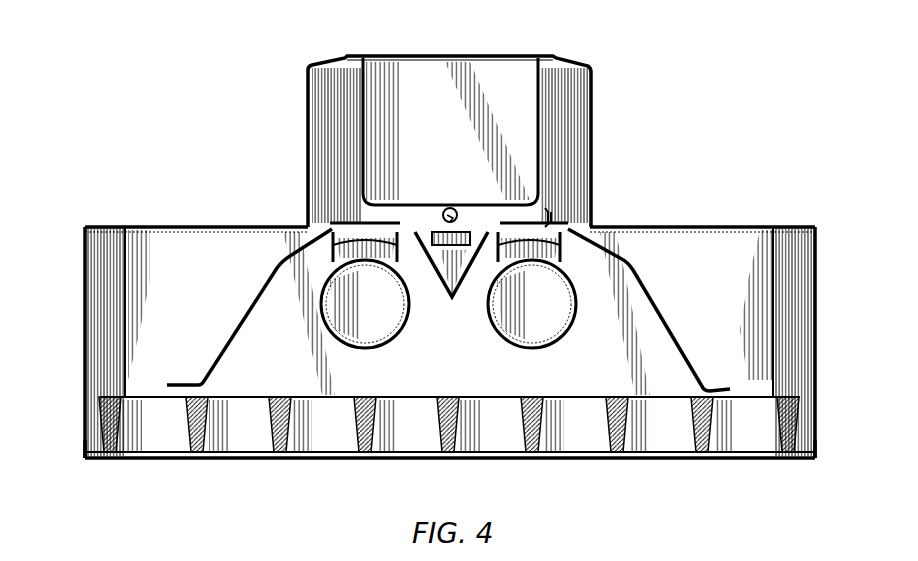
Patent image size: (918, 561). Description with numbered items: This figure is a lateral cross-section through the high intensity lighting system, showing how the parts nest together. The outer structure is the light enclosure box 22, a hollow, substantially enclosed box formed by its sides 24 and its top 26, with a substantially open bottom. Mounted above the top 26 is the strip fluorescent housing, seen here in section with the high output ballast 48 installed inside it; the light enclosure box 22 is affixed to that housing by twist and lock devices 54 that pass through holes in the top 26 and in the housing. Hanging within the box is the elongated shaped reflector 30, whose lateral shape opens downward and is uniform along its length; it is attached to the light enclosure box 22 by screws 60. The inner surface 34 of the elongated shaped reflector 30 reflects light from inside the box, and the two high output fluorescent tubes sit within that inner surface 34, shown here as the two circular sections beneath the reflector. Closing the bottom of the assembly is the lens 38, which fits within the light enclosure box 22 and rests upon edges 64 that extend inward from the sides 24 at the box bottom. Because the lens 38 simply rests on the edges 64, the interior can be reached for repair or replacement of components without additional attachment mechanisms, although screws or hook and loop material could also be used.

The light enclosure box 22 is at (188, 227).
The sides 24 is at (85, 330).
The top 26 is at (703, 230).
The elongated shaped reflector 30 is at (660, 300).
The inner surface 34 is at (212, 358).
The lens 38 is at (327, 447).
The high output ballast 48 is at (420, 70).
The twist and lock devices 54 is at (453, 212).
The screws 60 is at (547, 213).
The edges 64 is at (95, 456).